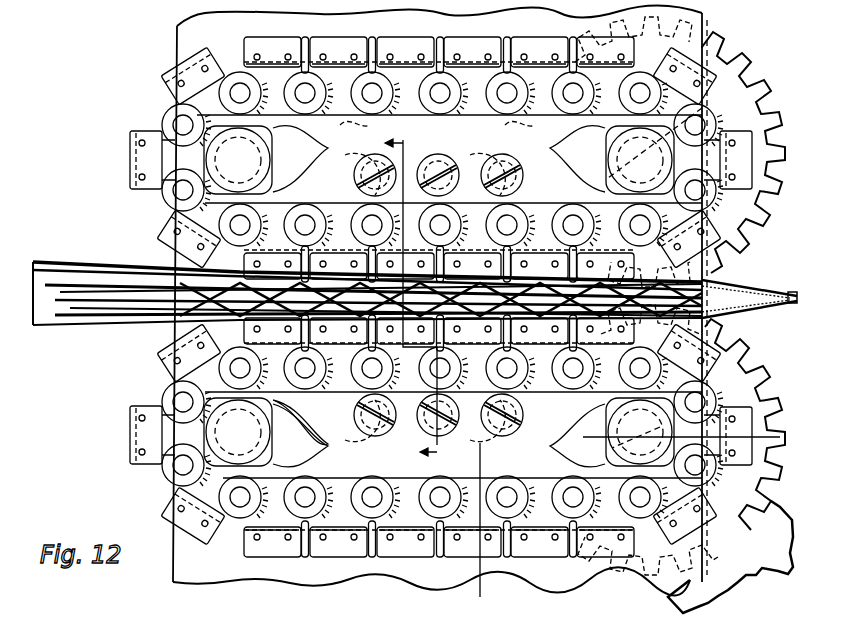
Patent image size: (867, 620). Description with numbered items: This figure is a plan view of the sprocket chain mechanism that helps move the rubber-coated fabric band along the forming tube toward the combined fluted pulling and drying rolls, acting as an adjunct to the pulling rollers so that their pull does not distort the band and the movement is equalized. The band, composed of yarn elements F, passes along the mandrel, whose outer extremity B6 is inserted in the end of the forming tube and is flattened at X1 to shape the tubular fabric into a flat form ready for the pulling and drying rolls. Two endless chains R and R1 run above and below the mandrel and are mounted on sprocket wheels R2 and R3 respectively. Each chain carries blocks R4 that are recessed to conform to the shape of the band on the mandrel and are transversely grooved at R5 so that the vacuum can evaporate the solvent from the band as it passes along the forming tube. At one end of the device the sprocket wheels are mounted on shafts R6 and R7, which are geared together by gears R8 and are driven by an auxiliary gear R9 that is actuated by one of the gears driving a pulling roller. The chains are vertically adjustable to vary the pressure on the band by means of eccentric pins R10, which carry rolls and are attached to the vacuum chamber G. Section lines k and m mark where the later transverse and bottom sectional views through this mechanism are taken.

The endless chain R is at (243, 533).
The endless chain R1 is at (139, 199).
The sprocket wheel R2 is at (312, 443).
The sprocket wheel R3 is at (350, 150).
The chain block R4 is at (410, 37).
The transverse groove R5 is at (500, 612).
The shaft R6 is at (660, 427).
The shaft R7 is at (702, 108).
The gear R8 is at (748, 222).
The auxiliary gear R9 is at (670, 596).
The eccentric pin R10 is at (490, 160).
The section line k- k is at (414, 295).
The section line m- m is at (634, 522).
The yarn element F is at (77, 266).
The vacuum chamber G is at (377, 585).
The outer extremity of the mandrel B6 is at (735, 275).
The flattened outer extremity X1 is at (793, 295).